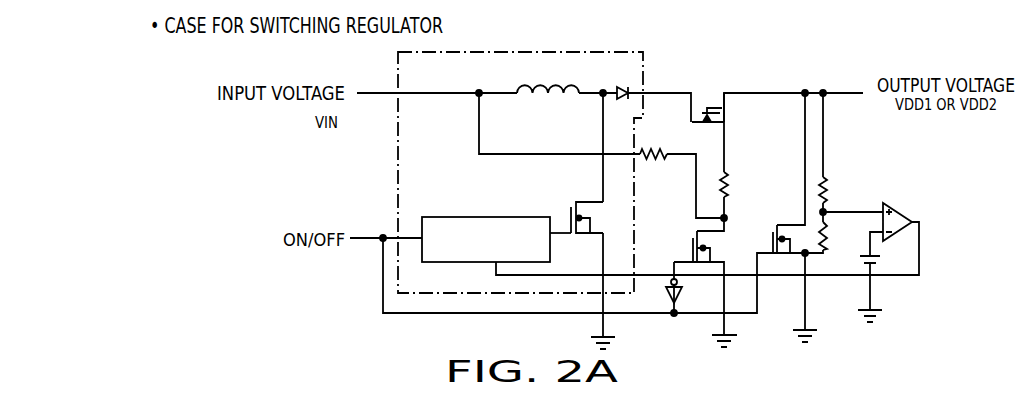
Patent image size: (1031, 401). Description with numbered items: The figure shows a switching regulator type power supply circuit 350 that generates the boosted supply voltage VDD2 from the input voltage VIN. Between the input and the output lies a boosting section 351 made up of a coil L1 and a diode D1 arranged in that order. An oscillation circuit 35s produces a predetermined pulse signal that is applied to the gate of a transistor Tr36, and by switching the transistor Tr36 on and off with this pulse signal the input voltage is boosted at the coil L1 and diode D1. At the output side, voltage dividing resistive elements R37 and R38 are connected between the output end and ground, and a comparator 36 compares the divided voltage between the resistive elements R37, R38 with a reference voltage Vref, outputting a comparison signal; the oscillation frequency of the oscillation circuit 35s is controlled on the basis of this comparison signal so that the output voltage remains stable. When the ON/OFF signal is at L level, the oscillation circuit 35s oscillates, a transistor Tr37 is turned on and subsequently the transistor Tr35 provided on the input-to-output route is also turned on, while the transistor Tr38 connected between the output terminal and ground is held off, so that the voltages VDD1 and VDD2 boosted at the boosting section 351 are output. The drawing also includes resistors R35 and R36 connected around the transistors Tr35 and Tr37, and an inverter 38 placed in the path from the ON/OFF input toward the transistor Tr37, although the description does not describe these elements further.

The power supply circuit 350 is at (966, 341).
The boosting section 351 is at (600, 52).
The oscillation circuit 35s is at (500, 217).
The comparator 36 is at (900, 206).
The inverter 38 is at (683, 292).
The coil L1 is at (548, 79).
The diode D1 is at (622, 82).
The transistor Tr35 is at (707, 108).
The transistor Tr36 is at (571, 207).
The transistor Tr37 is at (720, 246).
The transistor Tr38 is at (773, 232).
The resistor R35 is at (654, 147).
The resistor R36 is at (741, 184).
The voltage dividing resistive element R37 is at (838, 190).
The voltage dividing resistive element R38 is at (838, 236).
The reference voltage Vref is at (880, 265).